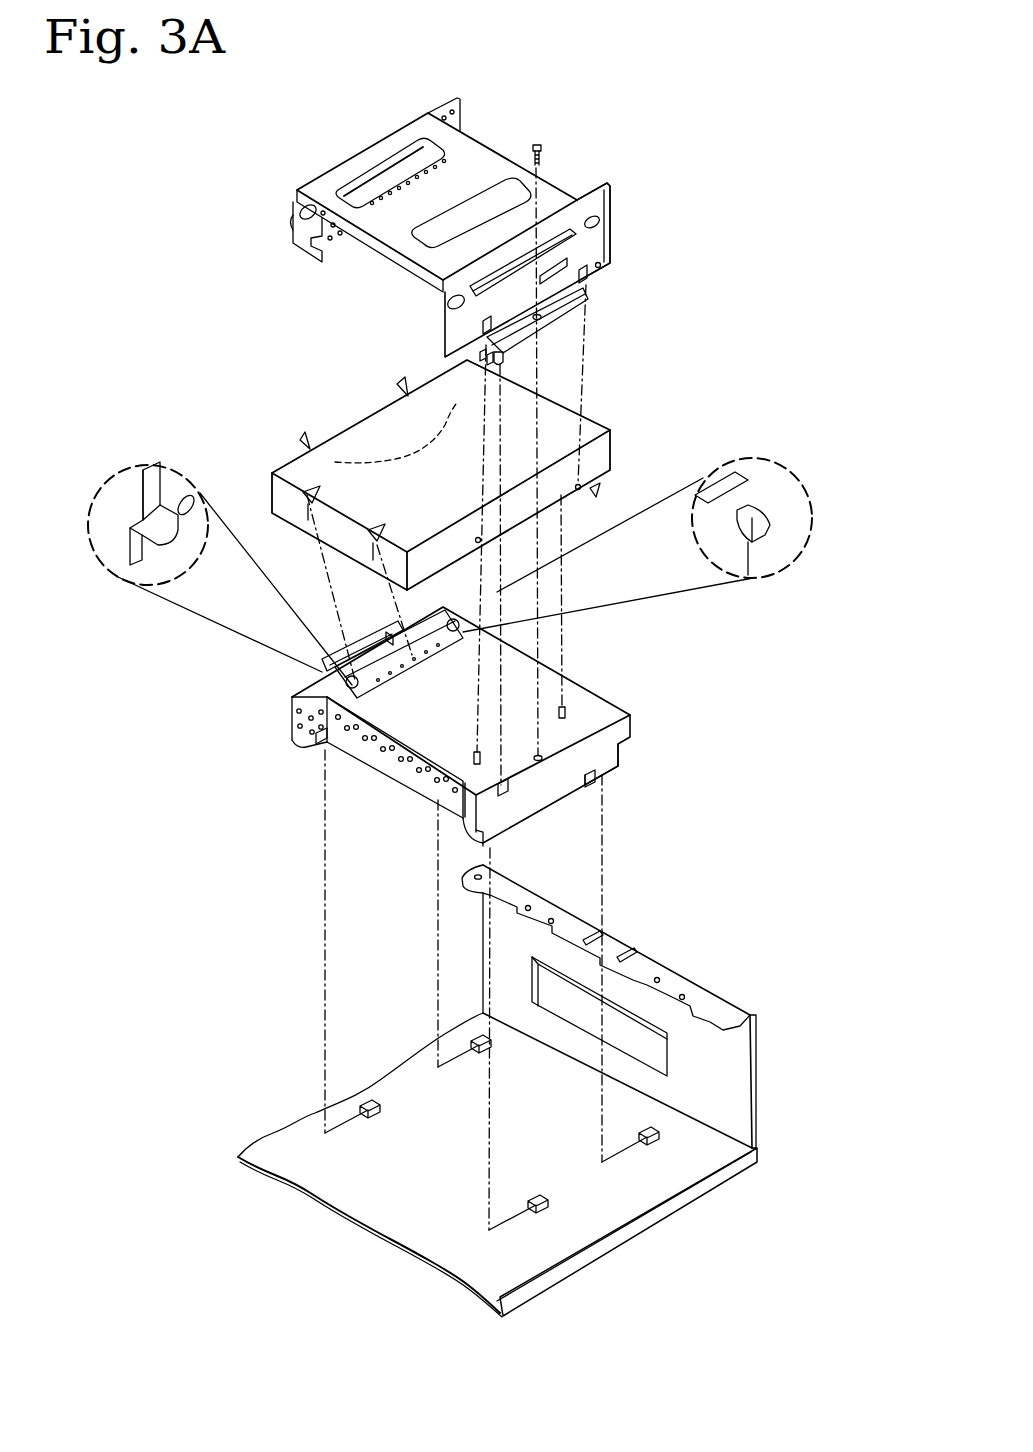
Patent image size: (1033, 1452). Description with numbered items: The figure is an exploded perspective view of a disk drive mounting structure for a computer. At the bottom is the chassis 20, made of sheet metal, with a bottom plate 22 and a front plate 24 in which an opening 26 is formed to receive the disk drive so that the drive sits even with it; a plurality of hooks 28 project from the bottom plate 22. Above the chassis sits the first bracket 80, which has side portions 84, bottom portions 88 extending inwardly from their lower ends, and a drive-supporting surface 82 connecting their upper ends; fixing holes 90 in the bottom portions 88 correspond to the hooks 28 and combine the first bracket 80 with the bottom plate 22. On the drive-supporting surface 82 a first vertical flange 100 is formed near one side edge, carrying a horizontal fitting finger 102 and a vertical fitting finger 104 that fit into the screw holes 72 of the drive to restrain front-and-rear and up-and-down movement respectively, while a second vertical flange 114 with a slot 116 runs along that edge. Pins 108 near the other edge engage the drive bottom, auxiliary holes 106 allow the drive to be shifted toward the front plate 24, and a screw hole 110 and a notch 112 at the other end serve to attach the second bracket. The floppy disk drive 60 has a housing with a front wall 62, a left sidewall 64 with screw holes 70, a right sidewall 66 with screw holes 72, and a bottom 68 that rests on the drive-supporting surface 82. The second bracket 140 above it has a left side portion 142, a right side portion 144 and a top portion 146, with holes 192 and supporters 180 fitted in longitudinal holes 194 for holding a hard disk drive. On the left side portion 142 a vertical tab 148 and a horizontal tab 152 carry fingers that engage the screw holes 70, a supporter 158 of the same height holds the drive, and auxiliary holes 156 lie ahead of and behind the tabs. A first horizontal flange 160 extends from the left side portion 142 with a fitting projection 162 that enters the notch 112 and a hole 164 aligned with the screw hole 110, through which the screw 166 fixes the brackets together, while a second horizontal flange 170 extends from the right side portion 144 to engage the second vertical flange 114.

The chassis 20 is at (525, 1091).
The bottom plate 22 is at (589, 1213).
The front plate 24 is at (731, 1061).
The opening 26 is at (634, 1032).
The hooks 28 is at (476, 1053).
The floppy disk drive 60 is at (482, 465).
The front wall 62 is at (581, 398).
The left sidewall 64 is at (602, 445).
The right sidewall 66 is at (376, 413).
The bottom 68 is at (315, 541).
The screw holes 70 is at (578, 484).
The screw holes 72 is at (438, 442).
The first bracket 80 is at (471, 632).
The drive-supporting surface 82 is at (621, 714).
The side portions 84 is at (303, 726).
The bottom portions 88 is at (299, 746).
The fixing holes 90 is at (320, 742).
The first vertical flange 100 is at (471, 588).
The horizontal fitting finger 102 is at (116, 525).
The vertical fitting finger 104 is at (776, 533).
The auxiliary holes 106 is at (196, 548).
The pins 108 is at (563, 706).
The screw hole 110 is at (592, 777).
The notch 112 is at (508, 793).
The second vertical flange 114 is at (323, 663).
The slot 116 is at (360, 645).
The second bracket 140 is at (459, 253).
The left side portion 142 is at (606, 198).
The right side portion 144 is at (459, 107).
The top portion 146 is at (480, 157).
The vertical tab 148 is at (561, 328).
The horizontal tab 152 is at (484, 360).
The auxiliary holes 156 is at (482, 333).
The supporter 158 is at (566, 270).
The first horizontal flange 160 is at (503, 362).
The fitting projection 162 is at (492, 368).
The hole 164 is at (546, 322).
The screw 166 is at (539, 146).
The second horizontal flange 170 is at (314, 250).
The supporters 180 is at (396, 177).
The holes 192 is at (301, 210).
The longitudinal holes 194 is at (477, 283).